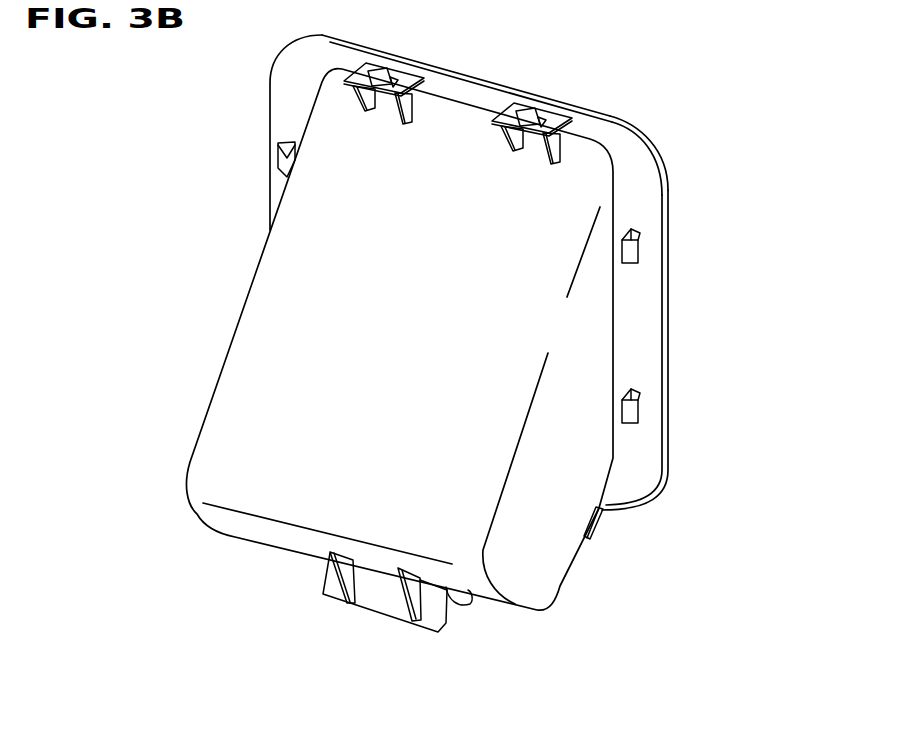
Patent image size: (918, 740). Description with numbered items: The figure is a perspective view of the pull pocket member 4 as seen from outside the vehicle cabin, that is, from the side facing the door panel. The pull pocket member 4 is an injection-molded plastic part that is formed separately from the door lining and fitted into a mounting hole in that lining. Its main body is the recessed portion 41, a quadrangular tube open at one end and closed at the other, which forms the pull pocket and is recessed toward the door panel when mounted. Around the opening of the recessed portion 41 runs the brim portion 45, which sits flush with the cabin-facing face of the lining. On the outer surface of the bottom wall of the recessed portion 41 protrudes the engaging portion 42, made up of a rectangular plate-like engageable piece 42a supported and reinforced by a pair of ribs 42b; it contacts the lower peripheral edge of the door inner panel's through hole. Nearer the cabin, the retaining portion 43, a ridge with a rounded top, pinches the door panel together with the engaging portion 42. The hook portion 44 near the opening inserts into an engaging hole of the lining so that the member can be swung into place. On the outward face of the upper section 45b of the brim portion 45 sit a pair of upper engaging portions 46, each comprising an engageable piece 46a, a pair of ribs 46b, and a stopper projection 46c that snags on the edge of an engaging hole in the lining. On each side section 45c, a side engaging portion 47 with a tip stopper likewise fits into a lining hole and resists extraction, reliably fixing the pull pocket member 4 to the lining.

The pull pocket member 4 is at (596, 102).
The recessed portion 41 is at (208, 400).
The engaging portion 42 is at (228, 563).
The engageable piece 42a is at (323, 586).
The ribs 42b is at (403, 600).
The retaining portion 43 is at (472, 594).
The hook portion 44 is at (597, 523).
The brim portion 45 is at (668, 211).
The upper section of the brim portion 45b is at (464, 89).
The side section of the brim portion 45c is at (640, 438).
The upper engaging portion 46 is at (203, 58).
The engageable piece 46a is at (351, 86).
The ribs 46b is at (404, 116).
The stopper projection 46c is at (355, 74).
The side engaging portion 47 is at (633, 252).